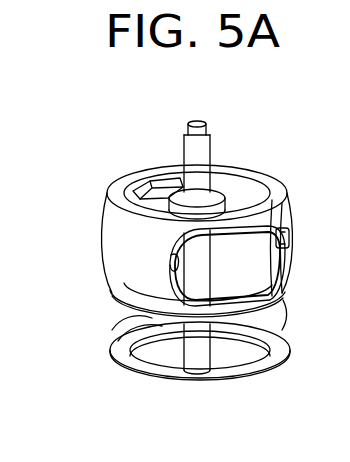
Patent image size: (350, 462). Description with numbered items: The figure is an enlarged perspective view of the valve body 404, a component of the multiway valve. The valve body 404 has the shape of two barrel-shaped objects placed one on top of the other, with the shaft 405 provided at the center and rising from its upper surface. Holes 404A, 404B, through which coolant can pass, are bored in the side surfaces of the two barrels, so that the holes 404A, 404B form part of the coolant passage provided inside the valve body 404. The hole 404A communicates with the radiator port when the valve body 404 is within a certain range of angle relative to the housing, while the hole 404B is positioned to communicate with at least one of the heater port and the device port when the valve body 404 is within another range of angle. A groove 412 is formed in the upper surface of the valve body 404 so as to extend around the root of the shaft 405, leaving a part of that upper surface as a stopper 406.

The valve body 404 is at (106, 380).
The hole 404A is at (168, 258).
The hole 404B is at (170, 364).
The shaft 405 is at (203, 152).
The stopper 406 is at (164, 178).
The groove 412 is at (142, 195).